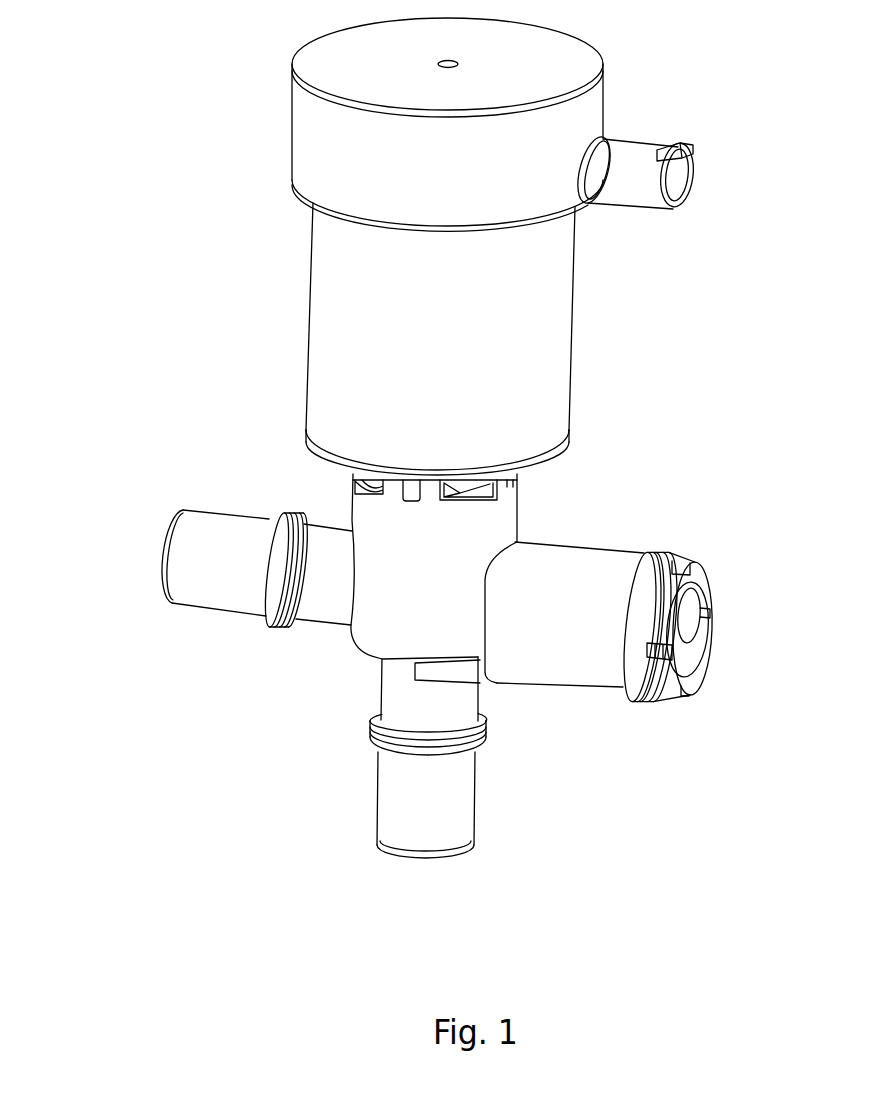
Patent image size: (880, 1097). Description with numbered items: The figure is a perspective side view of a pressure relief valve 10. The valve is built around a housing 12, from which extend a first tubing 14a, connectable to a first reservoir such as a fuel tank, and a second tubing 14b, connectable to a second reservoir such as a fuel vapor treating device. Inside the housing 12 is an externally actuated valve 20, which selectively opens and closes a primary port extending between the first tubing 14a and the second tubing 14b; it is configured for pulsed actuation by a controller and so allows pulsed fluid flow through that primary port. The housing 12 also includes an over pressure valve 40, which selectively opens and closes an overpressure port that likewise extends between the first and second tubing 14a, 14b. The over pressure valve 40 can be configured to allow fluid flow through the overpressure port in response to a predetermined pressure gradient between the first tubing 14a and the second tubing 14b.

The pressure relief valve 10 is at (172, 259).
The housing 12 is at (548, 323).
The first tubing 14a is at (205, 550).
The second tubing 14b is at (450, 802).
The externally actuated valve 20 is at (310, 318).
The over pressure valve 40 is at (580, 550).